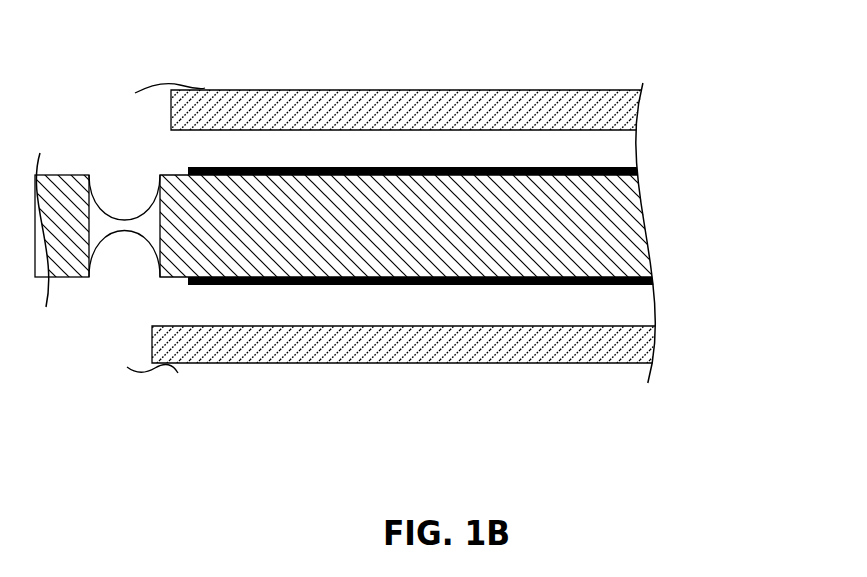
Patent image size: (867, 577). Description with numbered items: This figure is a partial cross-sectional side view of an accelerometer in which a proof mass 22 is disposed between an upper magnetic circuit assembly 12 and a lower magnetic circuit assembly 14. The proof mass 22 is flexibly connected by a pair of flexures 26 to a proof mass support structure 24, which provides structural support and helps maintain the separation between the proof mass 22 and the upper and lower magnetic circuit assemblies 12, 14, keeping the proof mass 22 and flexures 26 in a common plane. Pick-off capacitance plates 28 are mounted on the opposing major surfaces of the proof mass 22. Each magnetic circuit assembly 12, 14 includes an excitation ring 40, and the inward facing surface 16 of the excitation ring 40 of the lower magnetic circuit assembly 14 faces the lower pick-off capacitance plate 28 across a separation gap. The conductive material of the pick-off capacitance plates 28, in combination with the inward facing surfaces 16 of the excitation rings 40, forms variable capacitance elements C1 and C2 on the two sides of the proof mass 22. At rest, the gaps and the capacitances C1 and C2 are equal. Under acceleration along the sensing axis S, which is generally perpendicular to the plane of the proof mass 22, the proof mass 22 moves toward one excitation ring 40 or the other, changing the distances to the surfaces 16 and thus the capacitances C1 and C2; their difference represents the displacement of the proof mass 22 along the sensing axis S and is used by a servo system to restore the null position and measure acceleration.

The upper magnetic circuit assembly 12 is at (316, 94).
The lower magnetic circuit assembly 14 is at (329, 360).
The inward facing surface 16 is at (410, 327).
The proof mass 22 is at (220, 187).
The proof mass support structure 24 is at (74, 188).
The flexures 26 is at (120, 232).
The pick-off capacitance plates 28 is at (322, 287).
The excitation ring 40 is at (458, 348).
The variable capacitance element C1 is at (604, 152).
The variable capacitance element C2 is at (614, 302).
The sensing axis S is at (806, 322).